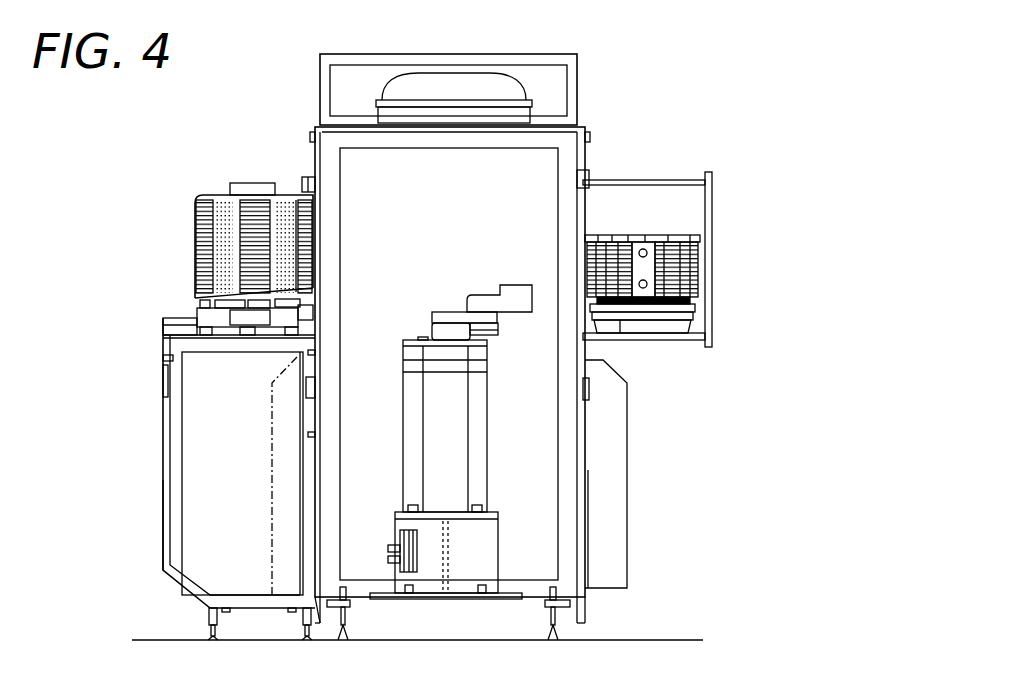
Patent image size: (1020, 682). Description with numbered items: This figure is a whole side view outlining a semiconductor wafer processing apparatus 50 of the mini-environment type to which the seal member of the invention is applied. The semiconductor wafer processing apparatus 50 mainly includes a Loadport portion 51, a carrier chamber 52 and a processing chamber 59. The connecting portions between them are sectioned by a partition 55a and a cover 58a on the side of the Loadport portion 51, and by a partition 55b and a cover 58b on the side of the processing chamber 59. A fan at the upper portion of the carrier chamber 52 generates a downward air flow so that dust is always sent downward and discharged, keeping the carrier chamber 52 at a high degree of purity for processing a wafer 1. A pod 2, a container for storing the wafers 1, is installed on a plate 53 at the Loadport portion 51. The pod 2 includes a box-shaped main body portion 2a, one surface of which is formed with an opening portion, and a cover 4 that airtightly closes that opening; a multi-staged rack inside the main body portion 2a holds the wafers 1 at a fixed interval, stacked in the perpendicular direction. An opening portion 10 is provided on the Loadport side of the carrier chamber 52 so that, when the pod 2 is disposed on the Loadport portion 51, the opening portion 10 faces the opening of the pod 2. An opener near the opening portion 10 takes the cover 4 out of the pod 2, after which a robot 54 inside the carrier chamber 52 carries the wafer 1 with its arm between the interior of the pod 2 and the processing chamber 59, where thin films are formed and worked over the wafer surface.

The wafer 1 is at (205, 212).
The pod 2 is at (207, 194).
The main body portion 2a is at (227, 193).
The cover 4 is at (300, 218).
The opening portion 10 is at (305, 190).
The semiconductor wafer processing apparatus 50 is at (304, 126).
The Loadport portion 51 is at (175, 348).
The carrier chamber 52 is at (522, 165).
The plate 53 is at (215, 330).
The robot 54 is at (485, 298).
The partition 55a is at (312, 478).
The partition 55b is at (587, 488).
The cover 58a is at (272, 403).
The cover 58b is at (612, 433).
The processing chamber 59 is at (672, 200).